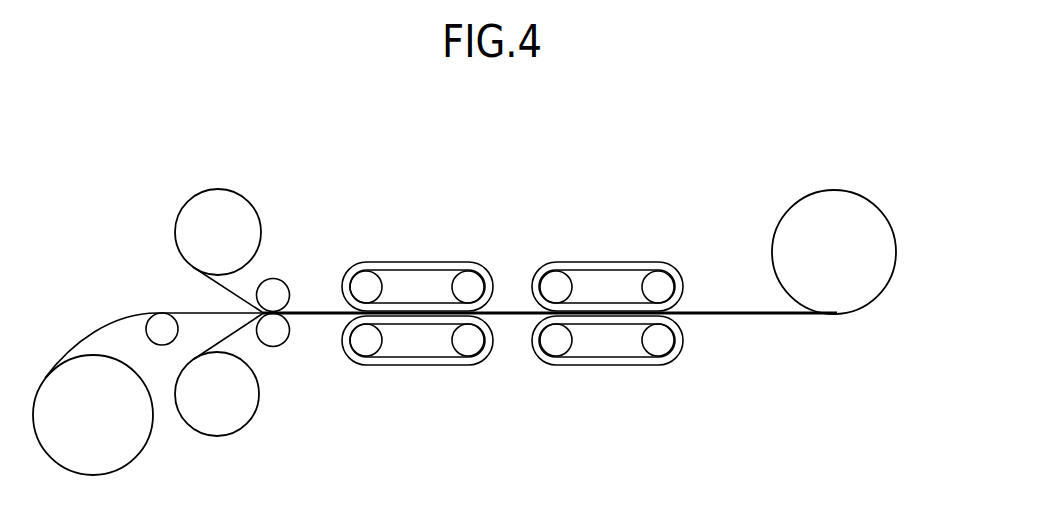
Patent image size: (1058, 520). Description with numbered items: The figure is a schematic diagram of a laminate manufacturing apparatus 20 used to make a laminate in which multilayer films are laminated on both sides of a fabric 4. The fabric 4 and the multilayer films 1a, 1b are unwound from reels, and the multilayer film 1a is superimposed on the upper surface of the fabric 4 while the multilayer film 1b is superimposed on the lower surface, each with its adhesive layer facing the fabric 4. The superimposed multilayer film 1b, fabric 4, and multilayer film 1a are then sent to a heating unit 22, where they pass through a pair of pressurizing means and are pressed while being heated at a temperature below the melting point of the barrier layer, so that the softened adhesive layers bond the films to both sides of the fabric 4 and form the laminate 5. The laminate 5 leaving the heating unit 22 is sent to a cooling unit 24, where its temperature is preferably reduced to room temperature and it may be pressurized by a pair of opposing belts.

The multilayer film 1a is at (188, 203).
The multilayer film 1b is at (201, 433).
The fabric 4 is at (131, 318).
The laminate 5 is at (744, 318).
The heating unit 22 is at (422, 242).
The cooling unit 24 is at (609, 242).
The laminate manufacturing apparatus 20 is at (886, 136).